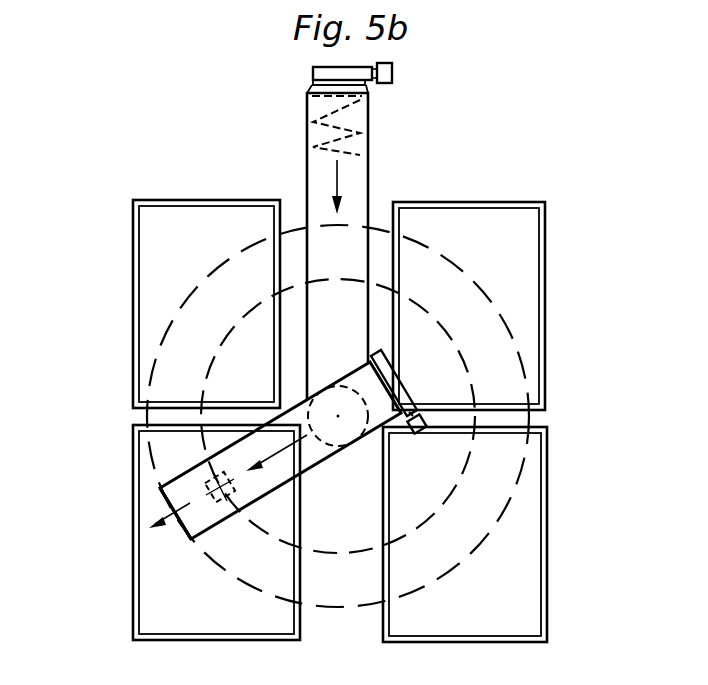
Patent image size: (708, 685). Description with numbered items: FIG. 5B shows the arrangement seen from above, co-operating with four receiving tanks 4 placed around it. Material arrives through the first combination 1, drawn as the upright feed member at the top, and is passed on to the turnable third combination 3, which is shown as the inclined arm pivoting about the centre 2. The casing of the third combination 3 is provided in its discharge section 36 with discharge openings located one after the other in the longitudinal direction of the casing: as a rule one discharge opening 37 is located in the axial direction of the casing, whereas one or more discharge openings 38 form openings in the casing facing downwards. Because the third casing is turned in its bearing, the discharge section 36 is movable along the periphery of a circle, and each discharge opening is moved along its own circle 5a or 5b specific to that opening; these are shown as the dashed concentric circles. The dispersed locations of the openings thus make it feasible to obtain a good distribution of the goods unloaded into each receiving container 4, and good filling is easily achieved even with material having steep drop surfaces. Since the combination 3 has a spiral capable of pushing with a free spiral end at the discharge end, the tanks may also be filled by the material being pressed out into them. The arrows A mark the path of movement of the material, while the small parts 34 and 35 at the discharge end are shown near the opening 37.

The first combination 1 is at (360, 170).
The pivot axis 2 is at (343, 385).
The third combination 3 is at (305, 451).
The receiving tank 4 is at (146, 252).
The circle 5a is at (161, 341).
The circle 5b is at (220, 348).
The stop 34 is at (429, 392).
The gate flap 35 is at (399, 398).
The discharge section 36 is at (208, 537).
The discharge opening 37 is at (167, 503).
The discharge opening 38 is at (238, 483).